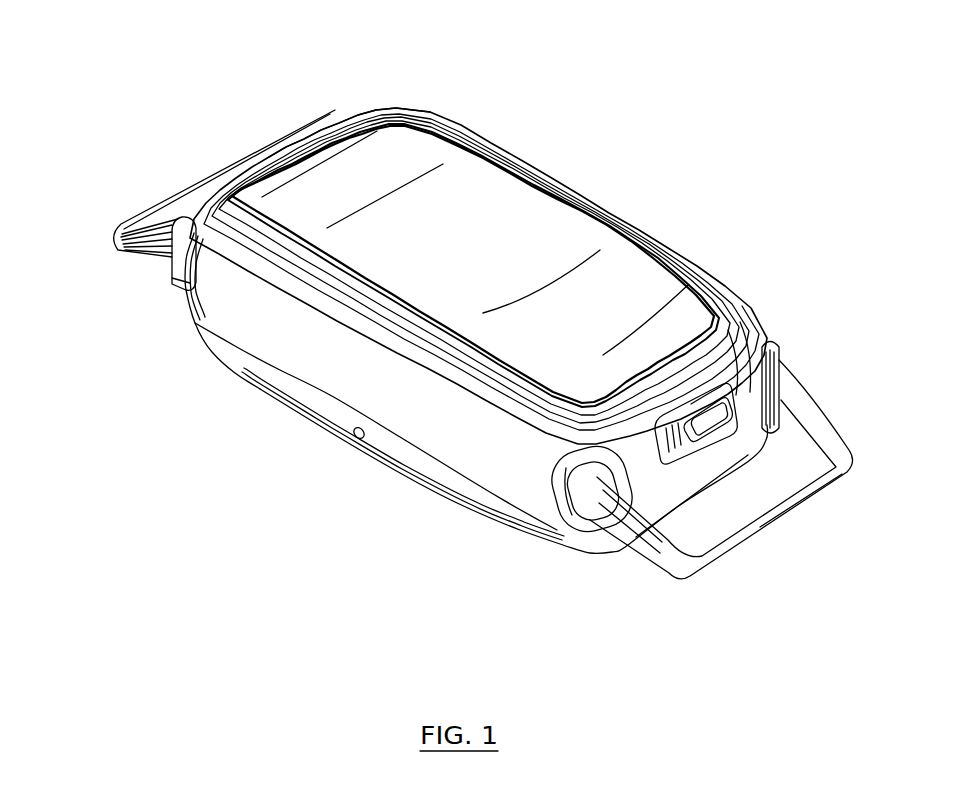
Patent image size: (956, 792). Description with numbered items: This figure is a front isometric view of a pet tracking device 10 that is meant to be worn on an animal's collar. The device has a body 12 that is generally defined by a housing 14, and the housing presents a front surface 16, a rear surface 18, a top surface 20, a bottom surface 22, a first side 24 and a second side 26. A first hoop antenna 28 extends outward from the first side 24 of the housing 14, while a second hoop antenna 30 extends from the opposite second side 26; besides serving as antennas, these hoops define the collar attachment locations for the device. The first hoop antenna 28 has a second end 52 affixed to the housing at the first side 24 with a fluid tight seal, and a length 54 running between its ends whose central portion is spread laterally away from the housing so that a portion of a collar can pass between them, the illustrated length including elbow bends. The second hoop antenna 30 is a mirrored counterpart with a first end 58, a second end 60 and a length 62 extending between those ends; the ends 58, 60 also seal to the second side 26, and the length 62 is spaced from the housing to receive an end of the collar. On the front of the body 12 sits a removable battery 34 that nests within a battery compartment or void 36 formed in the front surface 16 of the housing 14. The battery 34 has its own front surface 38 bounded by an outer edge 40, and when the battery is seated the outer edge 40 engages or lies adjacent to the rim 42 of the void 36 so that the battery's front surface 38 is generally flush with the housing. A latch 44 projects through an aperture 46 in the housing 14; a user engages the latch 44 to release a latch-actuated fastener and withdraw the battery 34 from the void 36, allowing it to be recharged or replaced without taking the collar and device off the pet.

The pet tracking device 10 is at (219, 52).
The body 12 is at (516, 135).
The housing 14 is at (557, 176).
The front surface 16 is at (297, 257).
The rear surface 18 is at (470, 511).
The top surface 20 is at (720, 273).
The bottom surface 22 is at (443, 423).
The first side 24 is at (314, 112).
The second side 26 is at (752, 392).
The first hoop antenna 28 is at (130, 217).
The second hoop antenna 30 is at (710, 557).
The removable battery 34 is at (620, 263).
The void 36 is at (728, 300).
The front surface 38 is at (473, 251).
The outer edge 40 is at (687, 287).
The rim 42 is at (722, 328).
The latch 44 is at (720, 417).
The aperture 46 is at (680, 460).
The second end 52 is at (167, 260).
The length 54 is at (197, 187).
The first end 58 is at (781, 398).
The second end 60 is at (607, 510).
The length 62 is at (777, 500).